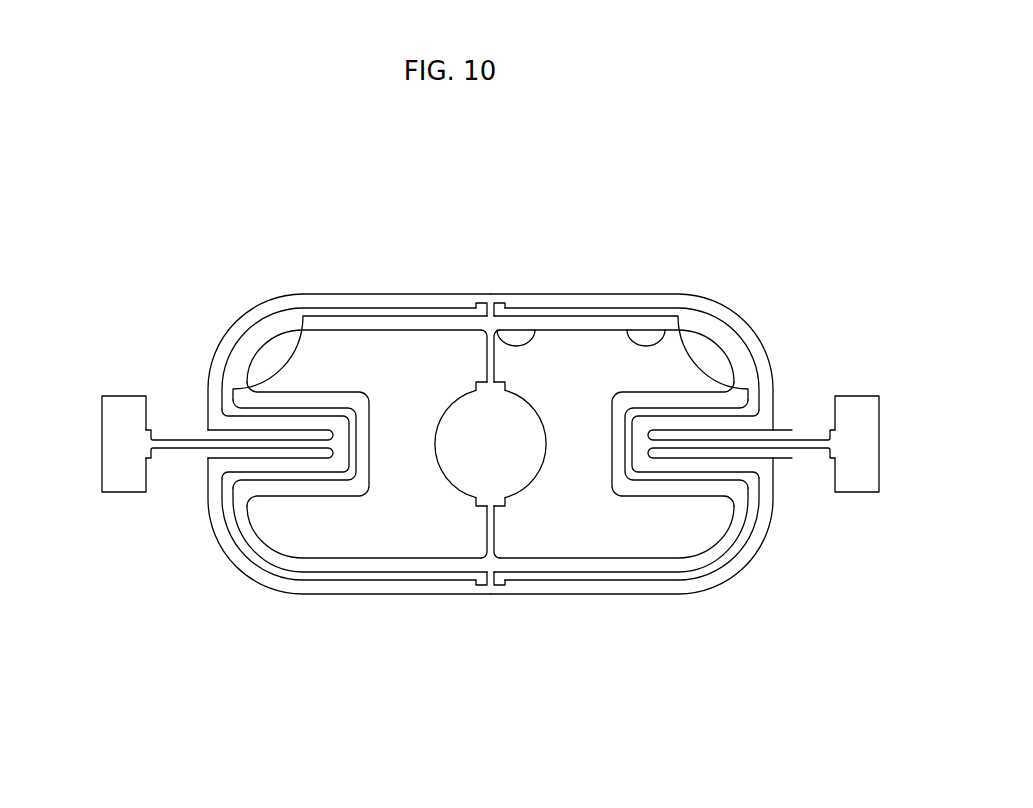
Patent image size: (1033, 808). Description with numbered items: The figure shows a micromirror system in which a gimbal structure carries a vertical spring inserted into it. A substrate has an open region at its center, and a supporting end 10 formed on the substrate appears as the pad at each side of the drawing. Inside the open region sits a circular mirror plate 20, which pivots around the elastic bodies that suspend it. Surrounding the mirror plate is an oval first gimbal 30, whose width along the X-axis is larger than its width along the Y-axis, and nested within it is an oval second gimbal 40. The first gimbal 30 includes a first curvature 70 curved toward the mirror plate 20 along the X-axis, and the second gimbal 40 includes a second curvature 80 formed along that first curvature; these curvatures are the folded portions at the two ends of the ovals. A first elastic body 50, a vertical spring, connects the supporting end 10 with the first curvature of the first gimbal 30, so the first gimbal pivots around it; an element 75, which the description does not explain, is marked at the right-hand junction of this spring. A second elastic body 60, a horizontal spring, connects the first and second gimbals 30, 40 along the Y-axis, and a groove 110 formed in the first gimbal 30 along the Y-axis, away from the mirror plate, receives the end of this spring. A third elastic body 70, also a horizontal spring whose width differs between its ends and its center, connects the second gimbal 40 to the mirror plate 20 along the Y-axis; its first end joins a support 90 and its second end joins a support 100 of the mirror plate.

The supporting end 10 is at (857, 494).
The mirror plate 20 is at (437, 450).
The first gimbal 30 is at (402, 293).
The second gimbal 40 is at (625, 330).
The first elastic body 50 is at (805, 455).
The second elastic body 60 is at (489, 302).
The first curvature / third elastic body 70 is at (486, 351).
The junction 75 is at (786, 428).
The second curvature 80 is at (362, 497).
The support 90 is at (535, 330).
The support of the mirror plate 100 is at (505, 388).
The groove 110 is at (490, 586).